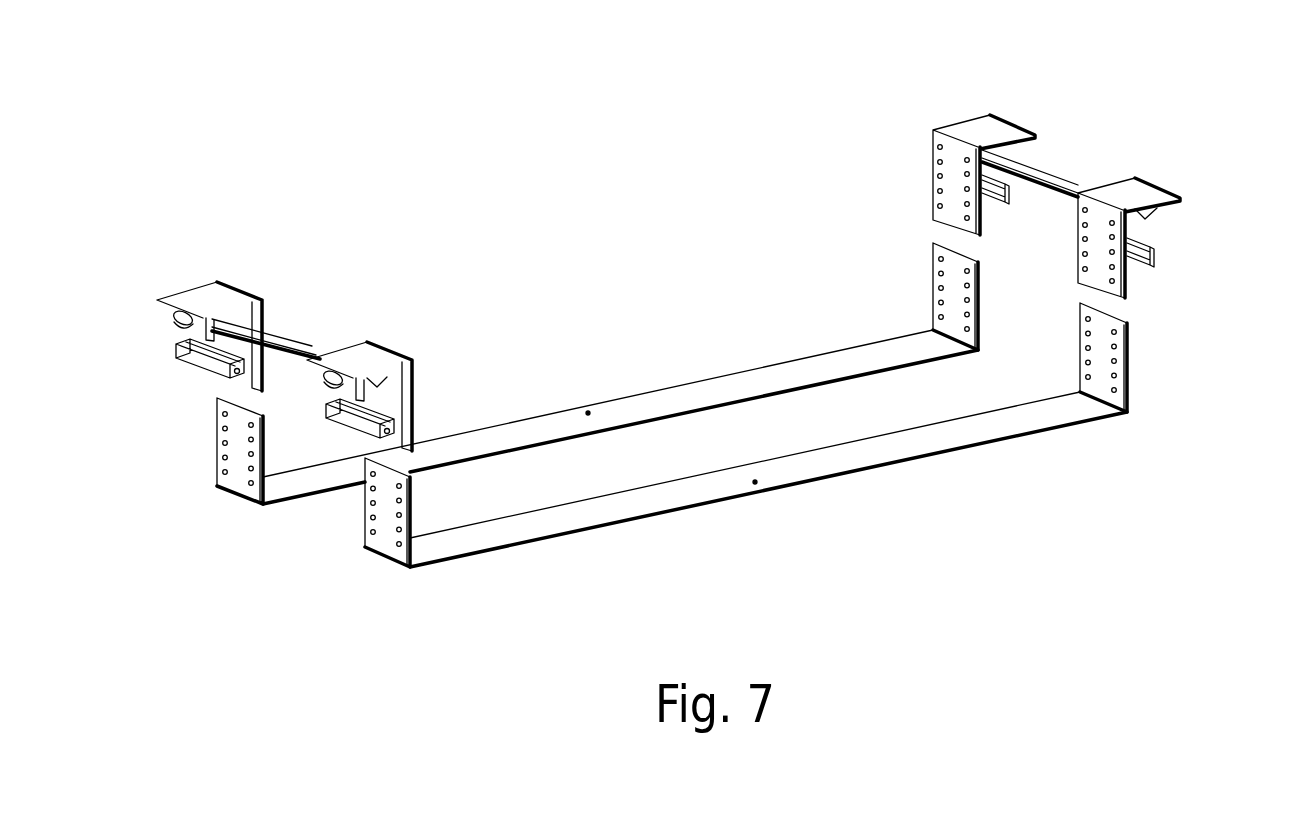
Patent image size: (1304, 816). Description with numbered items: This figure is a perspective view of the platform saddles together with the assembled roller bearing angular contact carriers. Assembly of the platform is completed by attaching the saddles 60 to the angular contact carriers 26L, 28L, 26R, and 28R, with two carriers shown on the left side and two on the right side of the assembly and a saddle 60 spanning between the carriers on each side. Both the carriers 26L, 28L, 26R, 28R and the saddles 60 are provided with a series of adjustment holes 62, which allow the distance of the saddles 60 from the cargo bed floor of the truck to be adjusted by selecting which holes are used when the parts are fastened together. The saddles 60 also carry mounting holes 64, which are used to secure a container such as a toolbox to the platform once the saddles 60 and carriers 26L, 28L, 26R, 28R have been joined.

The angular contact carrier 28L is at (292, 277).
The angular contact carrier 26L is at (415, 358).
The angular contact carrier 28R is at (1039, 126).
The angular contact carrier 26R is at (1172, 191).
The saddle 60 is at (770, 379).
The adjustment holes 62 is at (1112, 267).
The mounting holes 64 is at (738, 478).